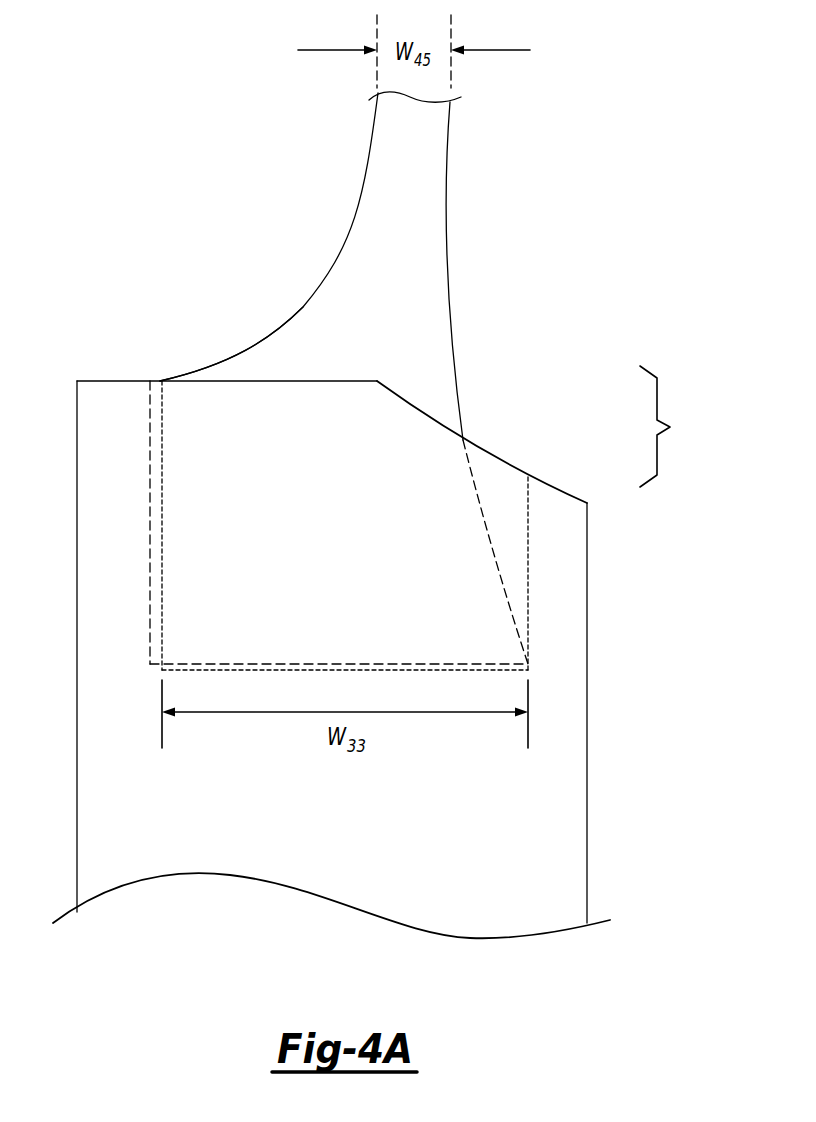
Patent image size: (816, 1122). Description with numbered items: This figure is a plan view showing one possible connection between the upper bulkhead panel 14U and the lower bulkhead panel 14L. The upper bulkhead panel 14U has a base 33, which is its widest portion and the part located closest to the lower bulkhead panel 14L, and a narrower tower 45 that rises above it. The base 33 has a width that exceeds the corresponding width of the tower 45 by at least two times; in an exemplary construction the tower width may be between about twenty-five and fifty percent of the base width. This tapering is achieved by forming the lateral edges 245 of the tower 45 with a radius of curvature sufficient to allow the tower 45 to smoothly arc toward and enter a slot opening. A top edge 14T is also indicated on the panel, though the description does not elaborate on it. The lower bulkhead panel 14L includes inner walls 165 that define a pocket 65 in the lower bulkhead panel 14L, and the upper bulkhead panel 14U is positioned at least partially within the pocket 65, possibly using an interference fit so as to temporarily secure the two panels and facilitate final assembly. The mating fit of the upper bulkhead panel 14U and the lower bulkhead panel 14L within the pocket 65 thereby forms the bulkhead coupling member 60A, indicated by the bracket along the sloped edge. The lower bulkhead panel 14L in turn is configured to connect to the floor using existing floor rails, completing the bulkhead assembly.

The tower 45 is at (422, 184).
The upper bulkhead panel 14U is at (240, 242).
The lateral edges 245 is at (240, 353).
The top edge of panel 14T is at (106, 380).
The bulkhead coupling member 60A is at (546, 434).
The lower bulkhead panel 14L is at (543, 883).
The base 33 is at (336, 557).
The pocket 65 is at (492, 470).
The inner walls 165 is at (528, 494).